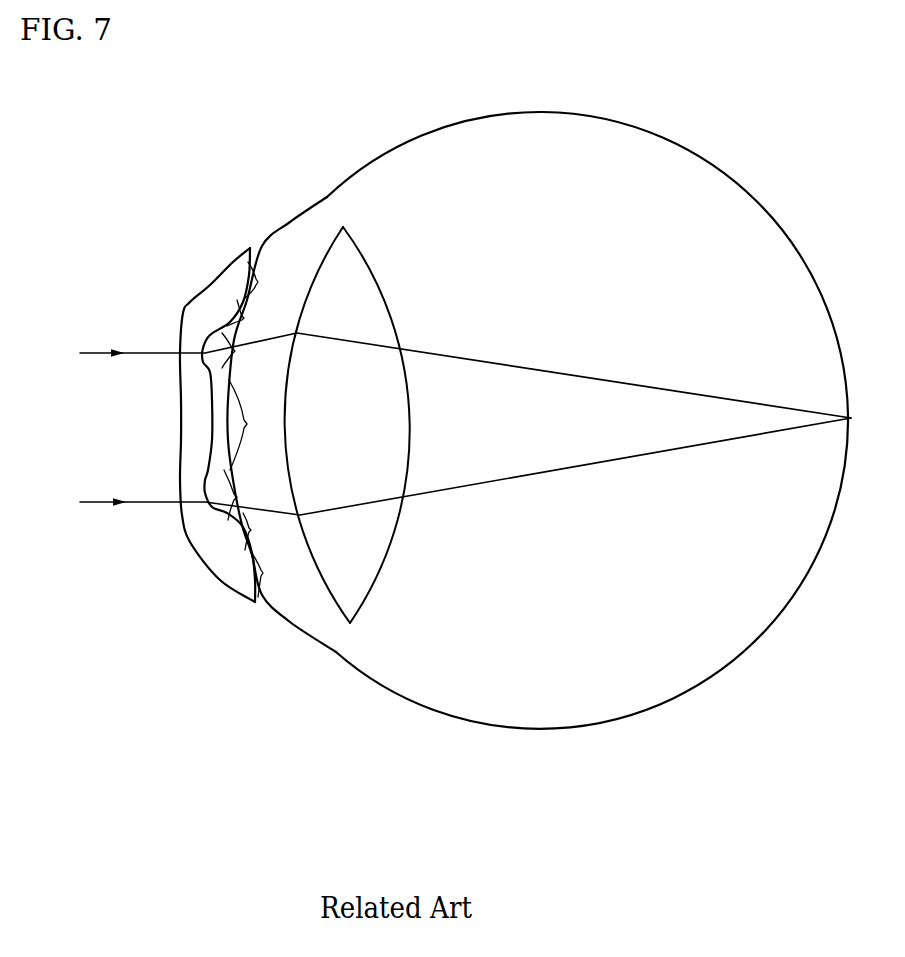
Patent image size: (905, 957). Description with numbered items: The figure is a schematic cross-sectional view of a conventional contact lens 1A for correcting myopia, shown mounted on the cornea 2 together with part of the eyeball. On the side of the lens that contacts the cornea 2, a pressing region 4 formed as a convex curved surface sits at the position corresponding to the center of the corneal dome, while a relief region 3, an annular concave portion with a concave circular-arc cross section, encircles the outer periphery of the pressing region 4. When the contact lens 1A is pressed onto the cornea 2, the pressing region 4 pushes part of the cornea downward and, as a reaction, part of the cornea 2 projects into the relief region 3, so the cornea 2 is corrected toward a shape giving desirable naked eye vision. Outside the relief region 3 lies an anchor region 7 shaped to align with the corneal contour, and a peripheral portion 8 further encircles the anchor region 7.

The contact lens 1A is at (203, 280).
The cornea 2 is at (268, 247).
The relief region 3 is at (235, 351).
The pressing region 4 is at (246, 425).
The anchor region 7 is at (244, 318).
The peripheral portion 8 is at (258, 282).